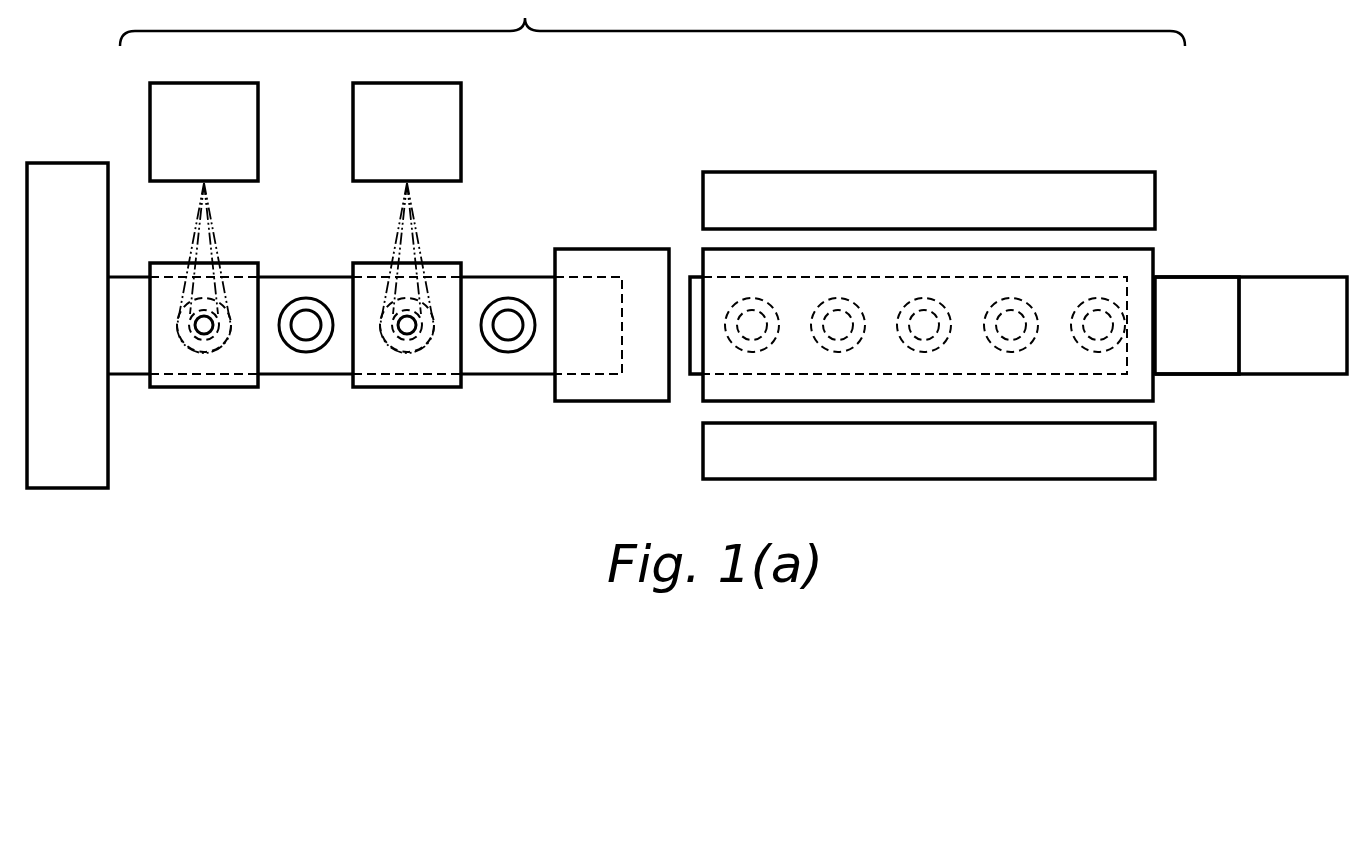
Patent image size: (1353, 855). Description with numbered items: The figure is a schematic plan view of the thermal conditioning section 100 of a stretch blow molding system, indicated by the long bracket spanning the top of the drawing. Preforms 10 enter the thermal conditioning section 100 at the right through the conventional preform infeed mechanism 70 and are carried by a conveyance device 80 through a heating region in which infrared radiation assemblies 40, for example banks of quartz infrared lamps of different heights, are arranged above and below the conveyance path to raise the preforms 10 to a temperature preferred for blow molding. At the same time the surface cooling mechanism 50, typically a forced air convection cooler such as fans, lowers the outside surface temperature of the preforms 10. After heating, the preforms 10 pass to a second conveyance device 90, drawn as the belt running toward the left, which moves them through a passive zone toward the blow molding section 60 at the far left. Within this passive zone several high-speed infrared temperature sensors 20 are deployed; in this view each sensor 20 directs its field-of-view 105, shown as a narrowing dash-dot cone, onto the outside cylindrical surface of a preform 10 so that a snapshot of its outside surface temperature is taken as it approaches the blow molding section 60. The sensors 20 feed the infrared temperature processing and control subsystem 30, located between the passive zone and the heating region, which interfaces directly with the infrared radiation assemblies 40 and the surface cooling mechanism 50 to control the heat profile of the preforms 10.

The thermal conditioning section 100 is at (652, 23).
The preforms 10 is at (498, 352).
The high-speed infrared temperature sensors 20 is at (259, 131).
The infrared temperature processing and control subsystem 30 is at (597, 249).
The infrared radiation assembly 40 is at (899, 171).
The surface cooling mechanism 50 is at (1193, 376).
The blow molding section 60 is at (68, 163).
The preform infeed mechanism 70 is at (1293, 277).
The conveyance device 80 is at (1157, 263).
The conveyance device 90 is at (127, 377).
The field-of-view 105 is at (222, 240).